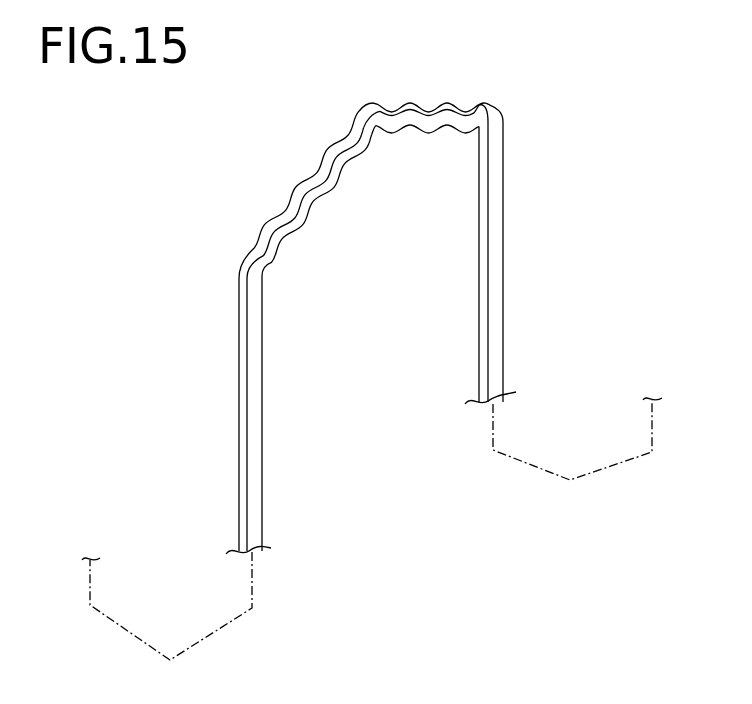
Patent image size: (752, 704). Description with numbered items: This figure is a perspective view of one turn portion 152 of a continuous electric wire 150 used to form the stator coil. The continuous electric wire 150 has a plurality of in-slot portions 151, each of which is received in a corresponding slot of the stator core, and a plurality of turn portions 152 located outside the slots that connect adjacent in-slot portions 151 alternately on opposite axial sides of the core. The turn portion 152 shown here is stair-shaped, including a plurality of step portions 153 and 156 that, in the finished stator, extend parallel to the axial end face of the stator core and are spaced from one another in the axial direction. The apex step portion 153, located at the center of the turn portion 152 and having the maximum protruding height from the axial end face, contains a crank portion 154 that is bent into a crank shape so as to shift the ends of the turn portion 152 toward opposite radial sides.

The continuous electric wire 150 is at (372, 337).
The in-slot portion 151 is at (493, 280).
The turn portion 152 is at (332, 197).
The apex step portion 153 is at (352, 137).
The crank portion 154 is at (360, 123).
The step portion 156 is at (403, 98).